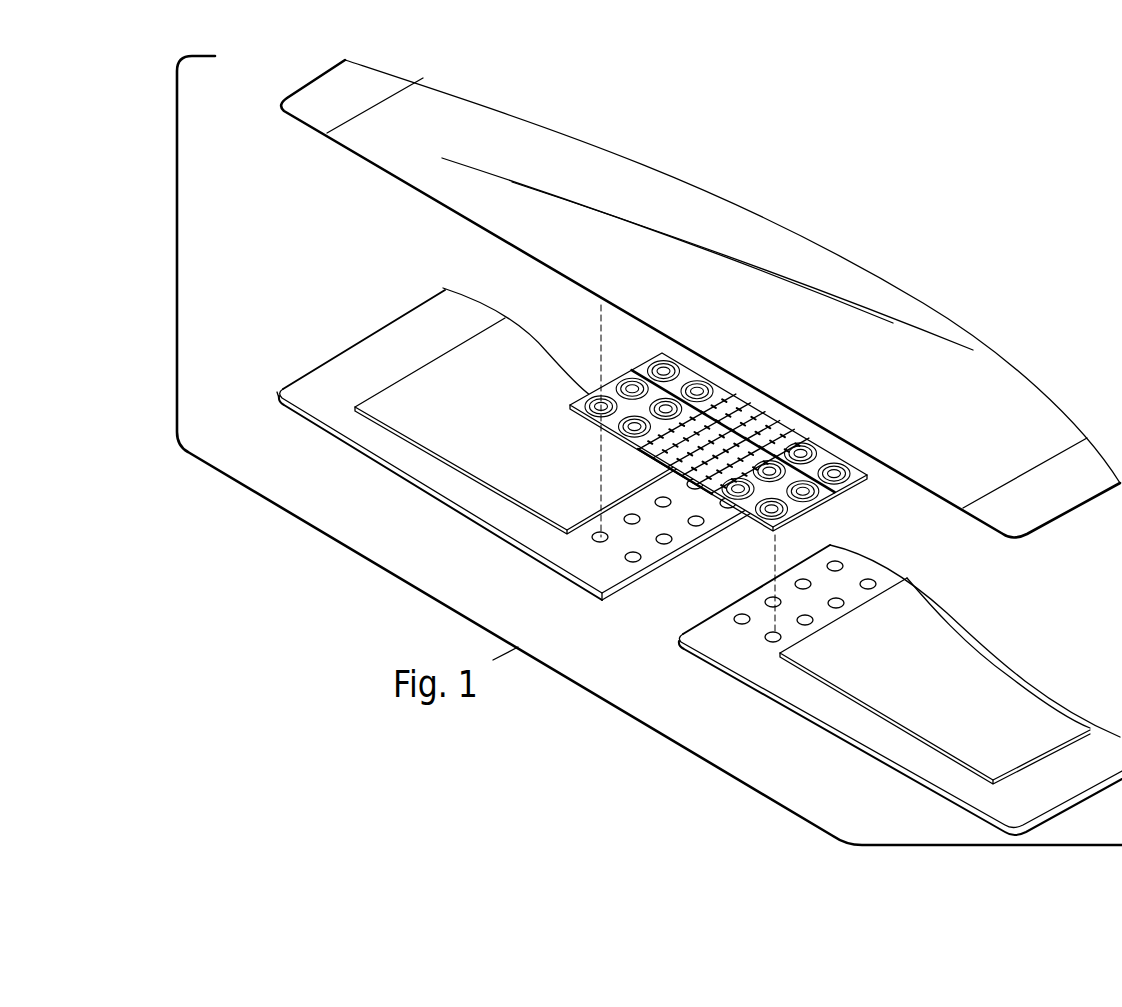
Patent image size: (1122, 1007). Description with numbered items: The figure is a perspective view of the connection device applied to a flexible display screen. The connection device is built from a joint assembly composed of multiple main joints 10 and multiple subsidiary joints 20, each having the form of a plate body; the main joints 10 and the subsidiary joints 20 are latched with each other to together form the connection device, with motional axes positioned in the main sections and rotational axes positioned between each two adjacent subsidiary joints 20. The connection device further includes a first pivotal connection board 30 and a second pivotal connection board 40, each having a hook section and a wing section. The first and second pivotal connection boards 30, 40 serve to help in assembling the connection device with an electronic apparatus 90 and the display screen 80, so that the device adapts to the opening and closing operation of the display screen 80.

The main joint 10 is at (638, 457).
The subsidiary joint 20 is at (724, 427).
The first pivotal connection board 30 is at (853, 482).
The second pivotal connection board 40 is at (608, 375).
The display screen 80 is at (920, 307).
The electronic apparatus 90 is at (440, 503).